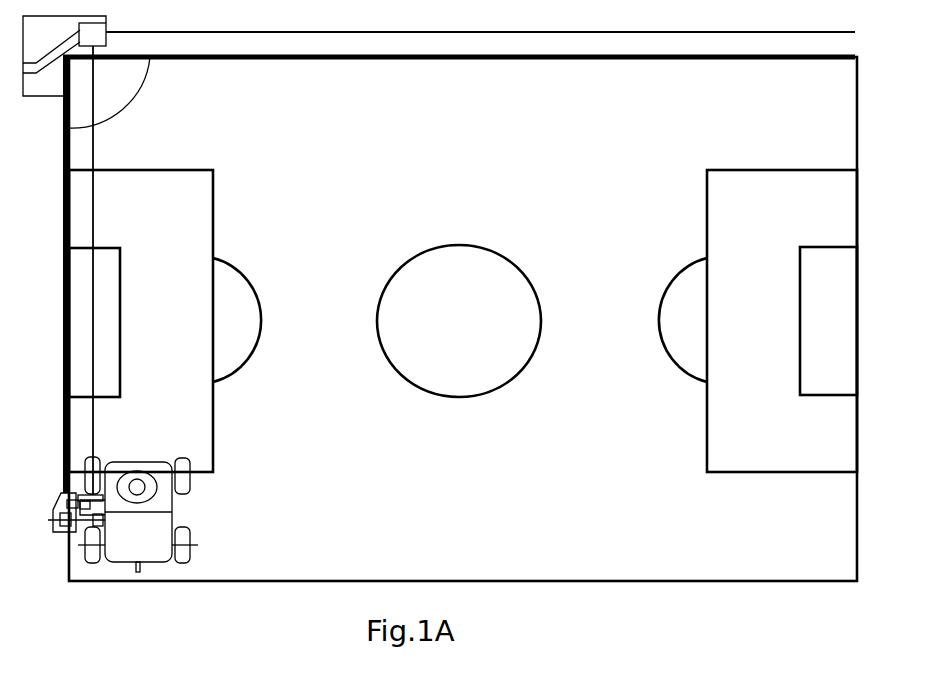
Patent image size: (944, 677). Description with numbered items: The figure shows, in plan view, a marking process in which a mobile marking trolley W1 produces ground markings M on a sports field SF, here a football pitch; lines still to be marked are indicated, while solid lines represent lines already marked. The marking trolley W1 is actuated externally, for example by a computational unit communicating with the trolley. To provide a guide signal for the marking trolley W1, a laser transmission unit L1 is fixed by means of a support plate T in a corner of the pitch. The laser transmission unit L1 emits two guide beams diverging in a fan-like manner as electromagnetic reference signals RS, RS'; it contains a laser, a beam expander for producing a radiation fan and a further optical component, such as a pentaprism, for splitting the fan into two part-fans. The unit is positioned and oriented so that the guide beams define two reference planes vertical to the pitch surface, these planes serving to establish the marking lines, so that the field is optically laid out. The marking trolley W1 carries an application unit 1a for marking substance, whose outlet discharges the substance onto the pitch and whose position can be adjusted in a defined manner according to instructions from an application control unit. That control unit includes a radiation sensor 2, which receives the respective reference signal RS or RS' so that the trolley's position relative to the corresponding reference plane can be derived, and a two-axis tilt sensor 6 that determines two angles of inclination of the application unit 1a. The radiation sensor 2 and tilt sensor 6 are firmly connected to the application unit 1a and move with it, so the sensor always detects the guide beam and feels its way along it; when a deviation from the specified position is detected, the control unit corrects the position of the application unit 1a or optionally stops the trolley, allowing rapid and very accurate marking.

The laser transmission unit L1 is at (86, 30).
The support plate T is at (50, 80).
The ground markings M is at (338, 58).
The electromagnetic reference signal RS is at (480, 90).
The electromagnetic reference signal RS' is at (160, 270).
The radiation sensor 2 is at (84, 497).
The two-axis tilt sensor 6 is at (66, 499).
The application unit 1a is at (63, 528).
The marking trolley W1 is at (217, 518).
The sports field SF is at (727, 599).